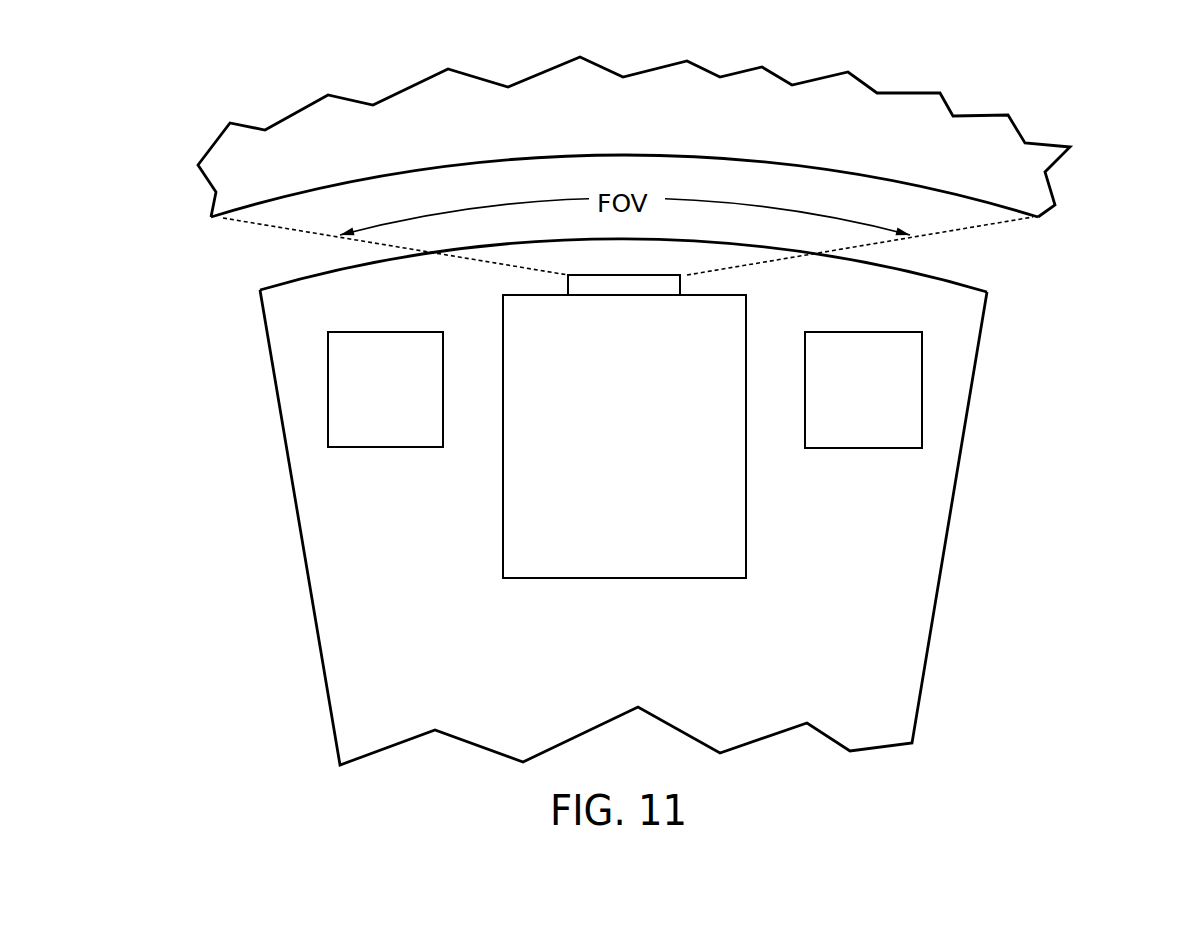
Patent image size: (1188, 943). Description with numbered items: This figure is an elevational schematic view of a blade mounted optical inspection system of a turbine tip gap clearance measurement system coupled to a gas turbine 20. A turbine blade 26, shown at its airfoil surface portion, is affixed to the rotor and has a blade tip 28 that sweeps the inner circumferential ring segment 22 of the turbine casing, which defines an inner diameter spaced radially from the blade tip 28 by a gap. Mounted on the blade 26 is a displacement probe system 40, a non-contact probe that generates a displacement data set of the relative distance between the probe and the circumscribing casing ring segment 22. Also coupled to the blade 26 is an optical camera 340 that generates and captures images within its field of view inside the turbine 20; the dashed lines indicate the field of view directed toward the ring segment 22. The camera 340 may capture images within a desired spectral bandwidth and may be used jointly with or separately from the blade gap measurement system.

The gas turbine 20 is at (217, 110).
The inner circumferential ring segment 22 is at (217, 220).
The turbine blade 26 is at (943, 553).
The blade tip 28 is at (970, 282).
The displacement probe system 40 is at (350, 380).
The optical camera 340 is at (528, 520).